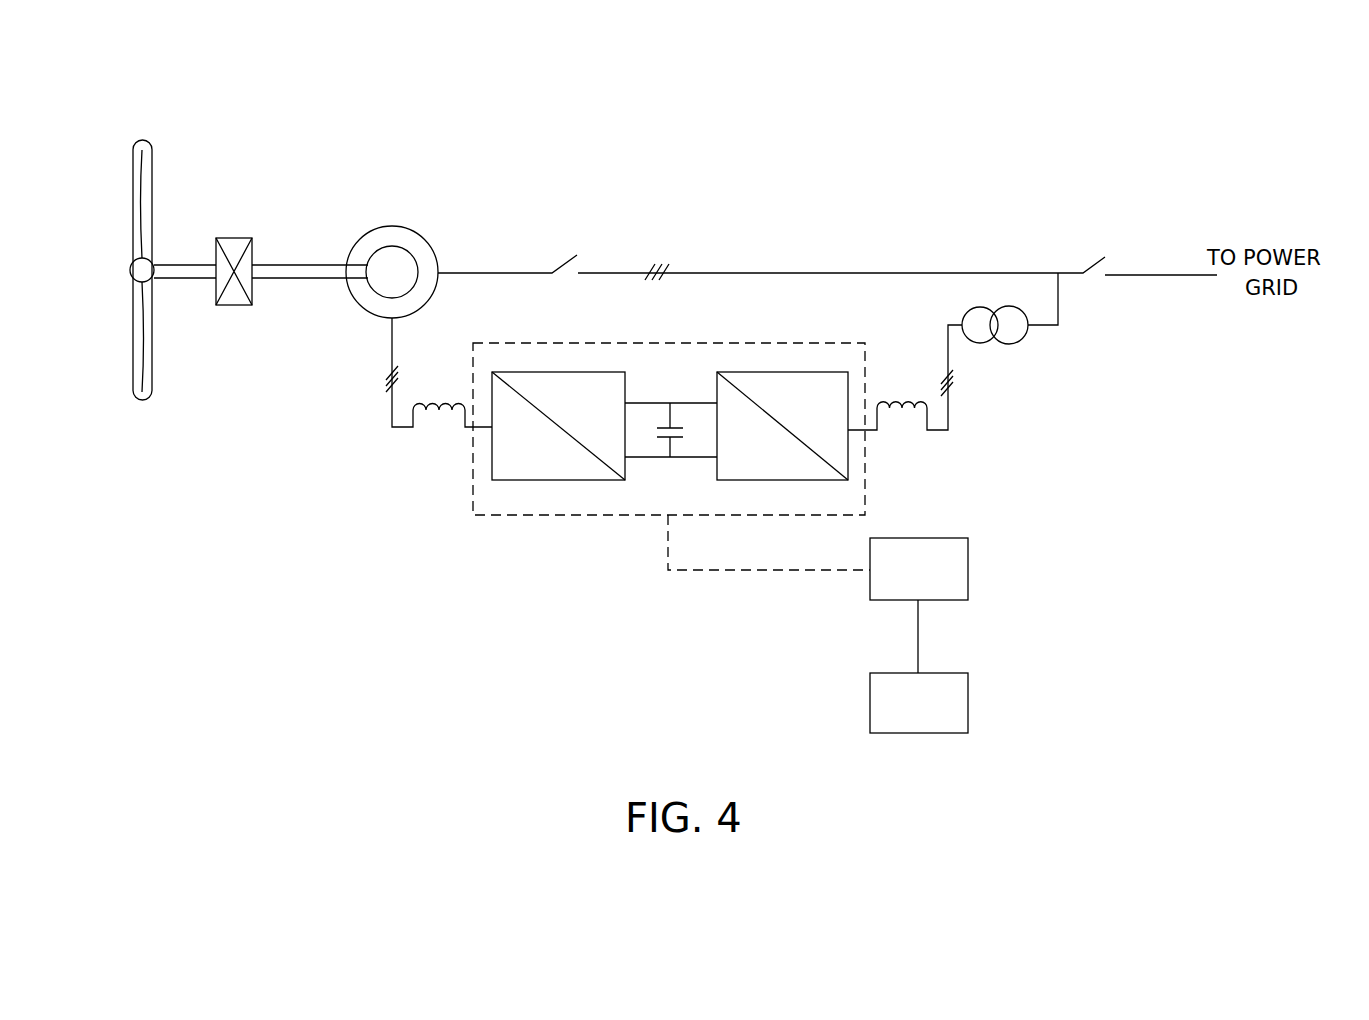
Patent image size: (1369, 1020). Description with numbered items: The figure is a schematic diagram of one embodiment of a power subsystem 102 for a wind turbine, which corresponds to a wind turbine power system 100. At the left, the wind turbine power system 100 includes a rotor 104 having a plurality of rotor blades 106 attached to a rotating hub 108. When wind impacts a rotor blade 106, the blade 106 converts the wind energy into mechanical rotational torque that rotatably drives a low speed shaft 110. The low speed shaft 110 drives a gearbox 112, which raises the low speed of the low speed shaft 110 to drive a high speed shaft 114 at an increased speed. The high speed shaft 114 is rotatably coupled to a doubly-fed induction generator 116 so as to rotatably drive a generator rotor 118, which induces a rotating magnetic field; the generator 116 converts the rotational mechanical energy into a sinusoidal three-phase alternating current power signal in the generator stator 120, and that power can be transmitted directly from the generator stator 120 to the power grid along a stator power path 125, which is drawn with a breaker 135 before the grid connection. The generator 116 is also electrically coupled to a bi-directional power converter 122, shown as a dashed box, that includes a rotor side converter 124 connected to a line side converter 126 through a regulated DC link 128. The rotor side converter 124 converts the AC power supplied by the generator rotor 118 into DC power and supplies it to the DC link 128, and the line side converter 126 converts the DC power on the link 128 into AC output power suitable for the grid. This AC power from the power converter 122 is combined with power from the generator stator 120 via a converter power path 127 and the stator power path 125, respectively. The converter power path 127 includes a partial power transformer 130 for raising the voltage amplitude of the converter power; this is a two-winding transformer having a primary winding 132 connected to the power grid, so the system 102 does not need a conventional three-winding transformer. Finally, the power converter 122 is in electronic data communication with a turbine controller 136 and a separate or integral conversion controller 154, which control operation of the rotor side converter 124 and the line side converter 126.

The wind turbine power system 100 is at (143, 120).
The power subsystem 102 is at (735, 78).
The rotor 104 is at (112, 222).
The rotor blades 106 is at (142, 177).
The rotor hub 108 is at (128, 275).
The low speed shaft 110 is at (173, 275).
The gearbox 112 is at (232, 238).
The high speed shaft 114 is at (303, 275).
The doubly-fed induction generator 116 is at (401, 258).
The generator rotor 118 is at (370, 293).
The generator stator 120 is at (363, 250).
The bi-directional power converter 122 is at (598, 517).
The rotor side converter 124 is at (557, 372).
The stator power path 125 is at (838, 273).
The line side converter 126 is at (783, 372).
The converter power path 127 is at (950, 400).
The DC link 128 is at (668, 393).
The partial power transformer 130 is at (962, 318).
The primary winding 132 is at (1042, 297).
The grid breaker 135 is at (1120, 257).
The turbine controller 136 is at (938, 713).
The conversion controller 154 is at (938, 580).